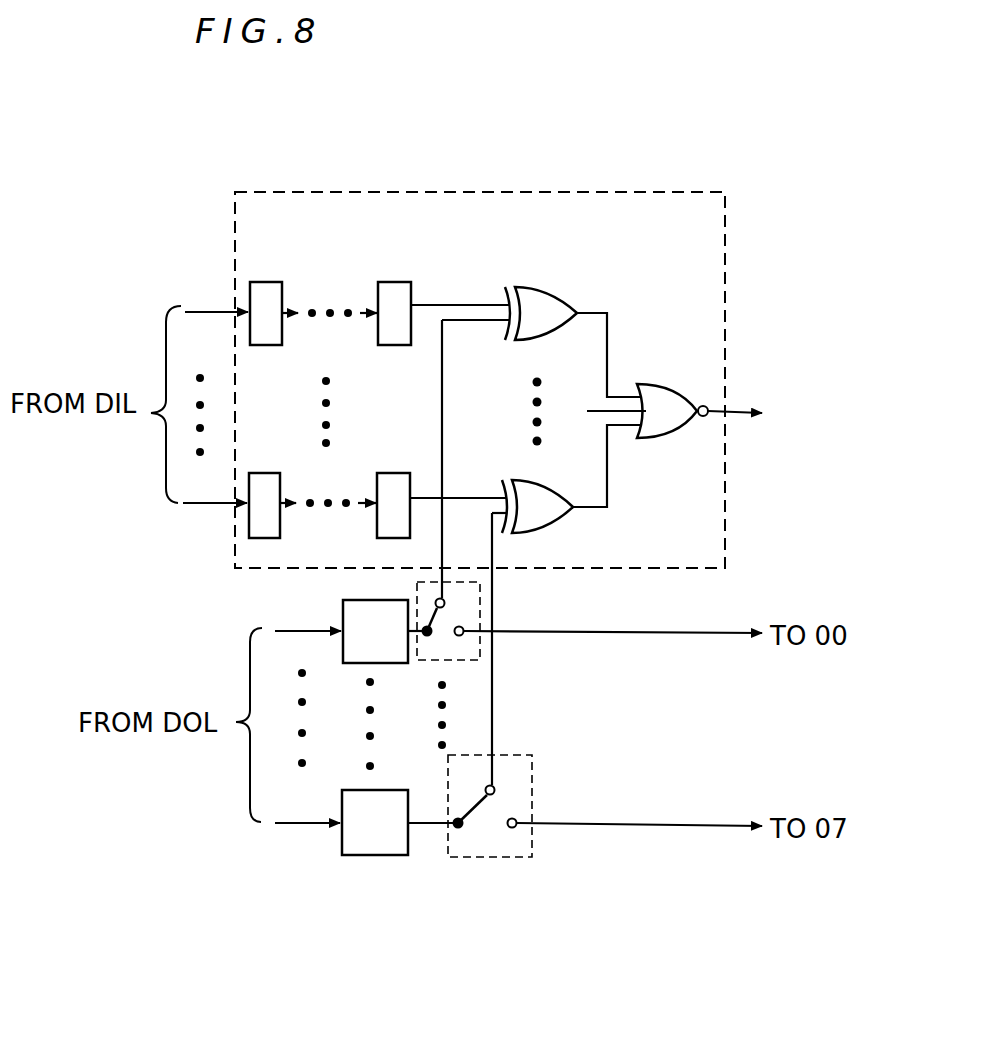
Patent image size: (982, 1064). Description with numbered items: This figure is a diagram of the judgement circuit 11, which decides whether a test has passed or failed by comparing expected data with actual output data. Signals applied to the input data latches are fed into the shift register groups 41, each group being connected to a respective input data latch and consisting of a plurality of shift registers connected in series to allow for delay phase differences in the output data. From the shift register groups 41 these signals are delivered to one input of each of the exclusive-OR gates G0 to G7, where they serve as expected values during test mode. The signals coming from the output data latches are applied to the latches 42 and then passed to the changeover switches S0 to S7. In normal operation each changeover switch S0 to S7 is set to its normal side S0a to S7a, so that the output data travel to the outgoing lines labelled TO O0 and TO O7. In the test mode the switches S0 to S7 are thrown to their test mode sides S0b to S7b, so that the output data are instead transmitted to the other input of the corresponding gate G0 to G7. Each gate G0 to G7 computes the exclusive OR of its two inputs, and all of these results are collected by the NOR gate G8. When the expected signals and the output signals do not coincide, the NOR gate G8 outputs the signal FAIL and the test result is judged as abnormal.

The judgement circuit 11 is at (726, 492).
The shift register groups 41 is at (378, 265).
The latches 42 is at (394, 651).
The gate G0 is at (540, 289).
The gate G7 is at (563, 521).
The NOR gate G8 is at (657, 383).
The changeover switch S0 is at (416, 642).
The normal side S0a is at (465, 625).
The test mode side S0b is at (436, 600).
The changeover switch S7 is at (531, 830).
The normal side S7a is at (518, 827).
The test mode side S7b is at (495, 786).